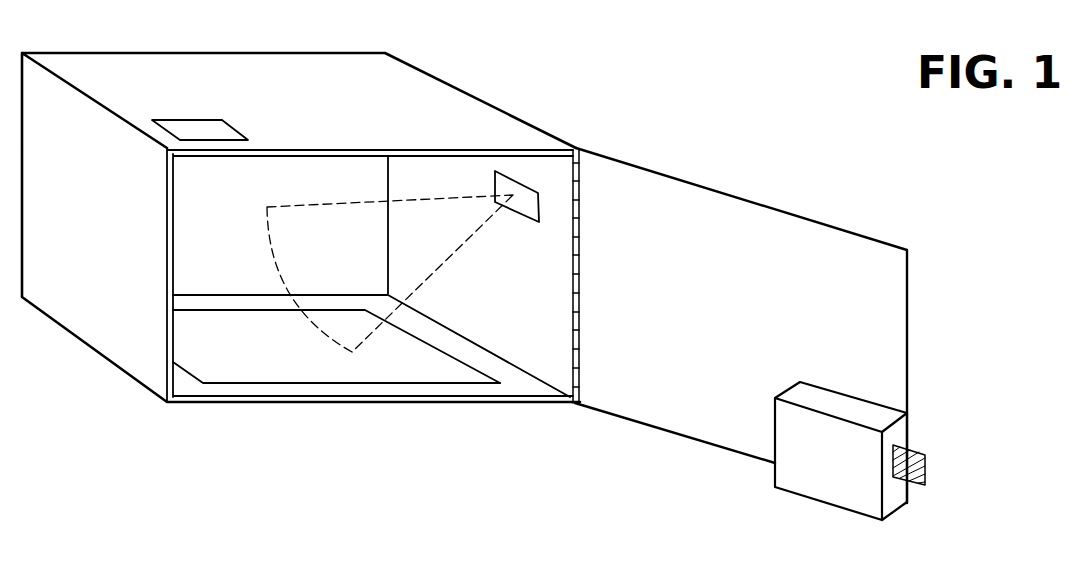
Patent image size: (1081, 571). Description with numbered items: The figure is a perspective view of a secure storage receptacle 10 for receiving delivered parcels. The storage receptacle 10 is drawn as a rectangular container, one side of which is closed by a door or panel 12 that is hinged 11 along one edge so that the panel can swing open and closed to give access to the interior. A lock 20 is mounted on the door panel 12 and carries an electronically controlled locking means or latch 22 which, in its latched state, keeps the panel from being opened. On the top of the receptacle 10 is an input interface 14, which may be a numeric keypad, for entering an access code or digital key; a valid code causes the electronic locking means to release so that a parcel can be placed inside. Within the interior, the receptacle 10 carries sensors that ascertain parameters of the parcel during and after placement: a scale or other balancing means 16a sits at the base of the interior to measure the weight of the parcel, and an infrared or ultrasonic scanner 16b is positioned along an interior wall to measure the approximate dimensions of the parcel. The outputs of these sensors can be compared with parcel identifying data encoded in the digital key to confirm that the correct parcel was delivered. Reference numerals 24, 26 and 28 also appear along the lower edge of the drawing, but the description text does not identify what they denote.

The storage receptacle 10 is at (452, 98).
The hinge 11 is at (577, 148).
The door or panel 12 is at (777, 210).
The input interface 14 is at (195, 130).
The scale 16a is at (222, 363).
The infrared or ultrasonic scanner 16b is at (523, 207).
The lock 20 is at (823, 502).
The latch 22 is at (925, 468).
The component 24 is at (378, 570).
The component 26 is at (503, 570).
The component 28 is at (627, 570).